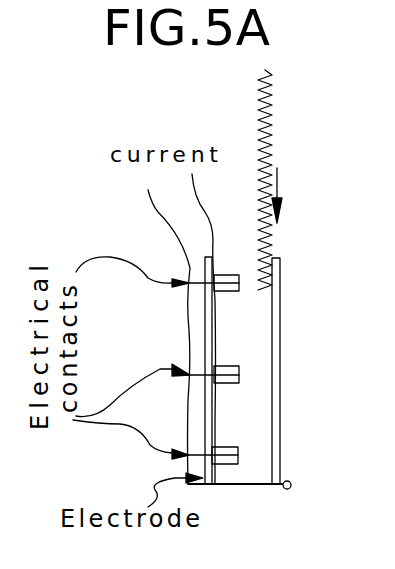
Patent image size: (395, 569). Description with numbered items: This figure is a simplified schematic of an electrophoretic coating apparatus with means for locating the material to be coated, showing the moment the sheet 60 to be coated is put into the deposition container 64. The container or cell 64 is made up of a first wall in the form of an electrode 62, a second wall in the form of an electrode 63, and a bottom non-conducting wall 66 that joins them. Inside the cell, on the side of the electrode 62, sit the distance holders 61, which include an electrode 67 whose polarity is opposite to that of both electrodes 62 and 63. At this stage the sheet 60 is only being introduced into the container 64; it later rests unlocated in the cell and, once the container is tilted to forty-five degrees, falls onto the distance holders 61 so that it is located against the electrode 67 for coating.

The sheet 60 is at (270, 147).
The distance holders 61 is at (219, 277).
The electrode 62 is at (203, 327).
The electrode 63 is at (278, 338).
The container 64 is at (370, 428).
The bottom non-conducting wall 66 is at (262, 485).
The electrode 67 is at (239, 291).